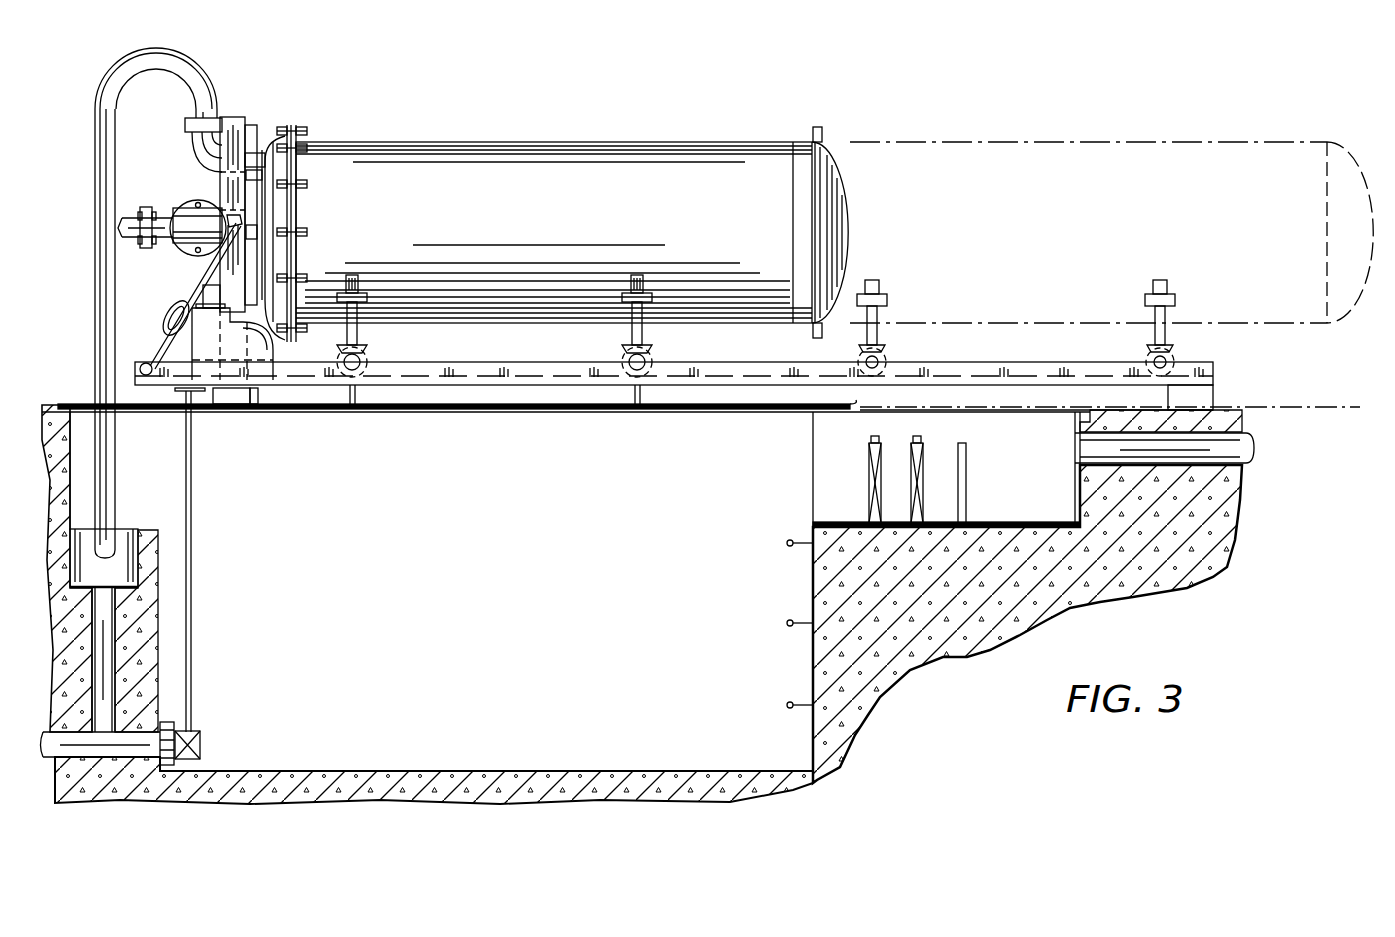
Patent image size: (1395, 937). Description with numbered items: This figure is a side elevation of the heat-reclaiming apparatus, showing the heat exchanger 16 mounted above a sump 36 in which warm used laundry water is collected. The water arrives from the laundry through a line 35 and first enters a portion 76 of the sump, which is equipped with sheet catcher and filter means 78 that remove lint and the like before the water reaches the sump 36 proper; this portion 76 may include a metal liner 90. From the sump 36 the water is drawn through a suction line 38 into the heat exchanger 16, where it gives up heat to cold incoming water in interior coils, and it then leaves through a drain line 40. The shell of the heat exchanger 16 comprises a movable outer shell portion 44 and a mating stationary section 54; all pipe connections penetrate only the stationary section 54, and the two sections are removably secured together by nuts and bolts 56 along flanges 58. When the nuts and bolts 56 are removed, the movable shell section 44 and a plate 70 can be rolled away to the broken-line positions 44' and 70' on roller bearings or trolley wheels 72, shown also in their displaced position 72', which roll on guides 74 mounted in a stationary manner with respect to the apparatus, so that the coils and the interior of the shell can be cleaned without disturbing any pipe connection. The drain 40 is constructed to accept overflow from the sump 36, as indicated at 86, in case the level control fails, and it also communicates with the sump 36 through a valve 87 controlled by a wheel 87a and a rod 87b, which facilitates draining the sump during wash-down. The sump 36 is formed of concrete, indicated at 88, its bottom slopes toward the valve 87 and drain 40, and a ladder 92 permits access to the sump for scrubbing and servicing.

The heat exchanger 16 is at (494, 141).
The line 35 is at (1250, 468).
The sump 36 is at (480, 620).
The line 38 is at (131, 218).
The drain line 40 is at (94, 286).
The movable outer shell portion 44 is at (572, 224).
The broken-line position of movable shell section 44' is at (1111, 216).
The stationary section 54 is at (250, 150).
The nuts and bolts 56 is at (300, 131).
The flanges 58 is at (298, 226).
The plate 70 is at (457, 395).
The position of plate 70' is at (1110, 394).
The roller bearings or trolley wheels 72 is at (510, 339).
The roller bearings or trolley wheels in moved position 72' is at (1035, 328).
The guides 74 is at (740, 362).
The portion of sump 76 is at (1029, 492).
The sheet catcher and filter means 78 is at (913, 437).
The overflow 86 is at (128, 530).
The valve 87 is at (201, 746).
The wheel 87a is at (176, 389).
The rod 87b is at (192, 510).
The concrete 88 is at (905, 672).
The metal liner 90 is at (818, 522).
The ladder 92 is at (792, 623).